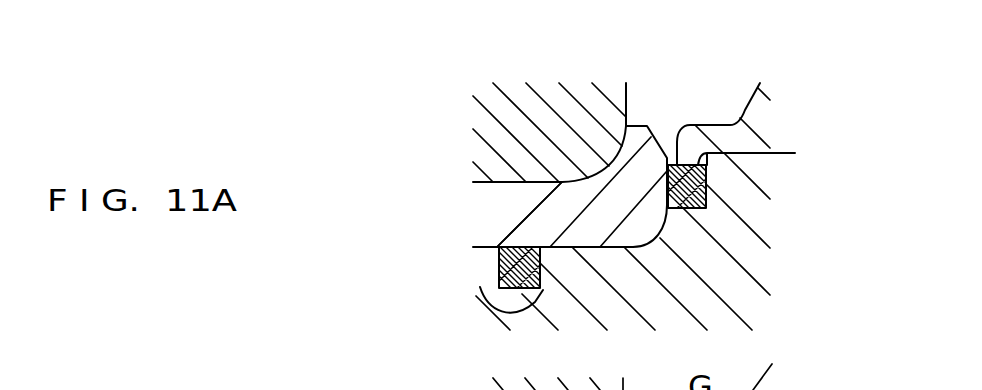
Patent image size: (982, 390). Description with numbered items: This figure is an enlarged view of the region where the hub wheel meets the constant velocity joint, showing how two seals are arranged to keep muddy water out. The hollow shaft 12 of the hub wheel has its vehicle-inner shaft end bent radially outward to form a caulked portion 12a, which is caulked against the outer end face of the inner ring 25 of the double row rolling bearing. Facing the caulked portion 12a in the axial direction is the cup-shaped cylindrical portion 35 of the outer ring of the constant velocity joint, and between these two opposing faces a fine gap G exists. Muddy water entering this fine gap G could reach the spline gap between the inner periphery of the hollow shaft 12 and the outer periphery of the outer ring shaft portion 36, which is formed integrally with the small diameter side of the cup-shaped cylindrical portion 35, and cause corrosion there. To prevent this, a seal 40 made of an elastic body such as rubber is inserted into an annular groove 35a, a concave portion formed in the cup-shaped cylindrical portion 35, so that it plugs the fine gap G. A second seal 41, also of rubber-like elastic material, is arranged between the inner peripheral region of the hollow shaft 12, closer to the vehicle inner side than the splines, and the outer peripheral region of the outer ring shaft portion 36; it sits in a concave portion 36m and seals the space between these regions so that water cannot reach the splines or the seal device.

The inner ring 25 is at (593, 110).
The hollow shaft 12 is at (499, 198).
The caulked portion 12a is at (638, 142).
The fine gap G is at (668, 160).
The cup-shaped cylindrical portion 35 is at (769, 74).
The annular groove 35a is at (795, 153).
The seal 40 is at (707, 208).
The outer ring shaft portion 36 is at (487, 267).
The seal 41 is at (499, 284).
The recess of lower body 36m is at (500, 316).